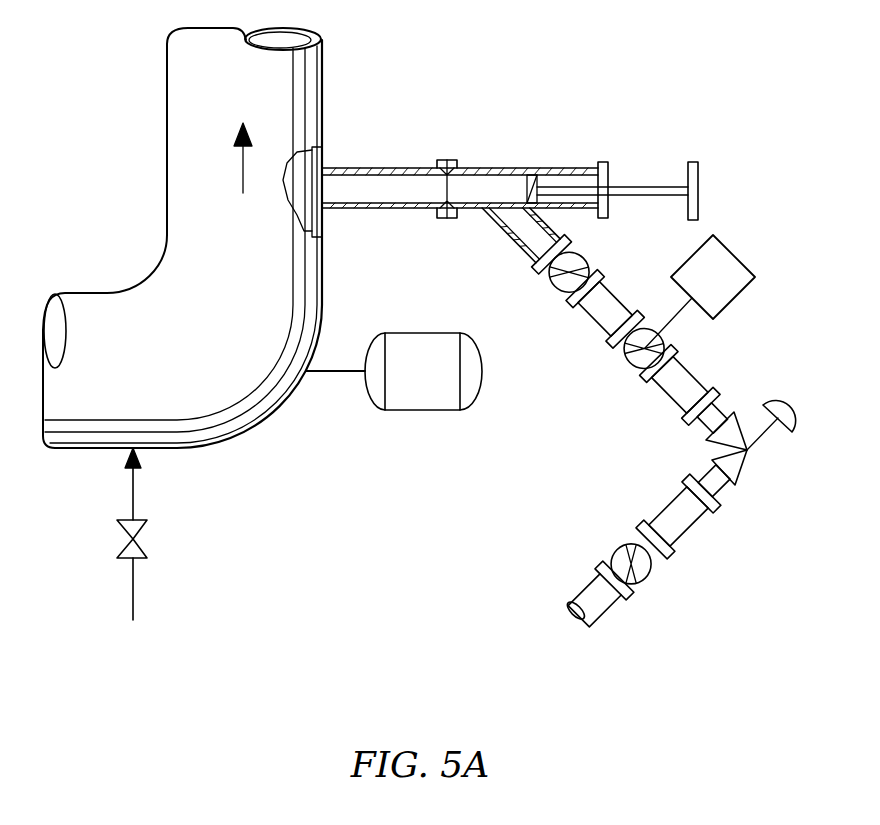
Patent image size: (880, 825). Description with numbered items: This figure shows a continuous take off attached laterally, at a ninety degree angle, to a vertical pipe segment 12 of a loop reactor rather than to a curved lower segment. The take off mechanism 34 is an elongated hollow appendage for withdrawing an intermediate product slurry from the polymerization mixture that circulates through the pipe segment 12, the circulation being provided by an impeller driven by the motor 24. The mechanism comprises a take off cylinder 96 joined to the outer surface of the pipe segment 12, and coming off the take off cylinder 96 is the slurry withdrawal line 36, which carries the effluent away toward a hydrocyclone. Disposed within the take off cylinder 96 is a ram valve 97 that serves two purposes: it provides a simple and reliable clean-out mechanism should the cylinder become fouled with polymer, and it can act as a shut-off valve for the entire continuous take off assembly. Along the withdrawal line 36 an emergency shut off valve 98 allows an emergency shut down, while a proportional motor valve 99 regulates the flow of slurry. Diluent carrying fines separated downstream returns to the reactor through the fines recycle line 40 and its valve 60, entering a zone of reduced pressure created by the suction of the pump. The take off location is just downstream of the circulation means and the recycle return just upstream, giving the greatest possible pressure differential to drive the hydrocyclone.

The vertical pipe segment 12 is at (323, 101).
The motor 24 is at (408, 410).
The take off mechanism 34 is at (490, 174).
The slurry withdrawal line 36 is at (507, 240).
The fines recycle line 40 is at (133, 593).
The valve 60 is at (118, 546).
The take off cylinder 96 is at (365, 209).
The ram valve 97 is at (531, 187).
The emergency shut off valve 98 is at (697, 289).
The proportional motor valve 99 is at (792, 412).